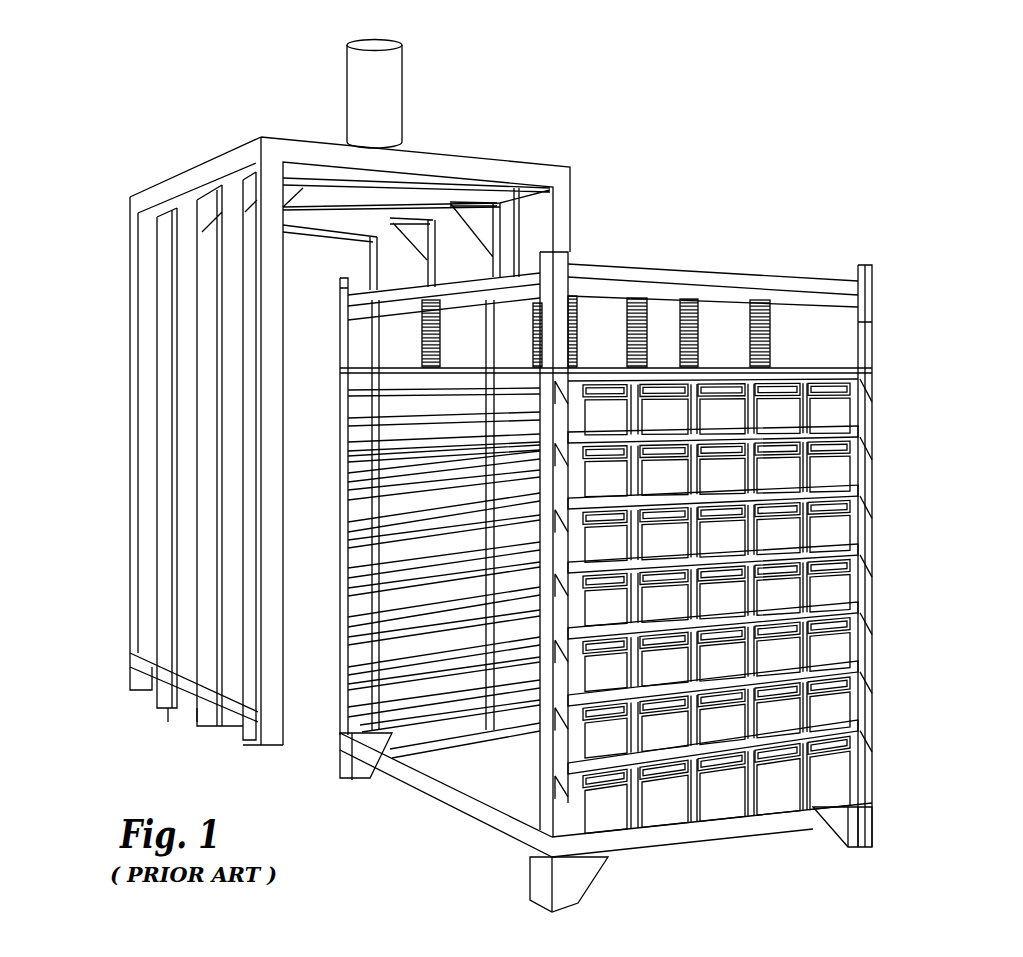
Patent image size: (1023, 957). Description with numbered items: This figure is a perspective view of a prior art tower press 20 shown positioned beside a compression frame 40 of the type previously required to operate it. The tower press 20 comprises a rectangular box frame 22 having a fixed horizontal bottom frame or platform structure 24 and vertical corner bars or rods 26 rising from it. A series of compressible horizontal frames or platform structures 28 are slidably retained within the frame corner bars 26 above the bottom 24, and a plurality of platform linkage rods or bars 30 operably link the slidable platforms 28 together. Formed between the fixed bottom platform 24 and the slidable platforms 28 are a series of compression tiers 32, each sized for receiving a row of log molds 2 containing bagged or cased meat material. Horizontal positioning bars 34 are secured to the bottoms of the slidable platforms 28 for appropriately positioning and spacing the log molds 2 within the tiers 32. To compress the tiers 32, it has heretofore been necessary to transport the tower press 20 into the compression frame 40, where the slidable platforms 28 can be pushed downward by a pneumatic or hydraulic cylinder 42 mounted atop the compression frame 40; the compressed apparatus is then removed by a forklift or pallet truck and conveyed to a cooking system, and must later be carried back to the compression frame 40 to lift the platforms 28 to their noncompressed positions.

The log mold 2 is at (838, 417).
The tower press 20 is at (912, 336).
The rectangular box frame 22 is at (837, 295).
The fixed horizontal bottom frame or platform structure 24 is at (855, 797).
The vertical corner bars or rods 26 is at (863, 652).
The slidable horizontal platform structure 28 is at (872, 385).
The platform linkage rod or bar 30 is at (350, 487).
The compression tier 32 is at (833, 408).
The horizontal positioning bar 34 is at (692, 812).
The compression frame 40 is at (548, 175).
The pneumatic or hydraulic cylinder 42 is at (387, 83).